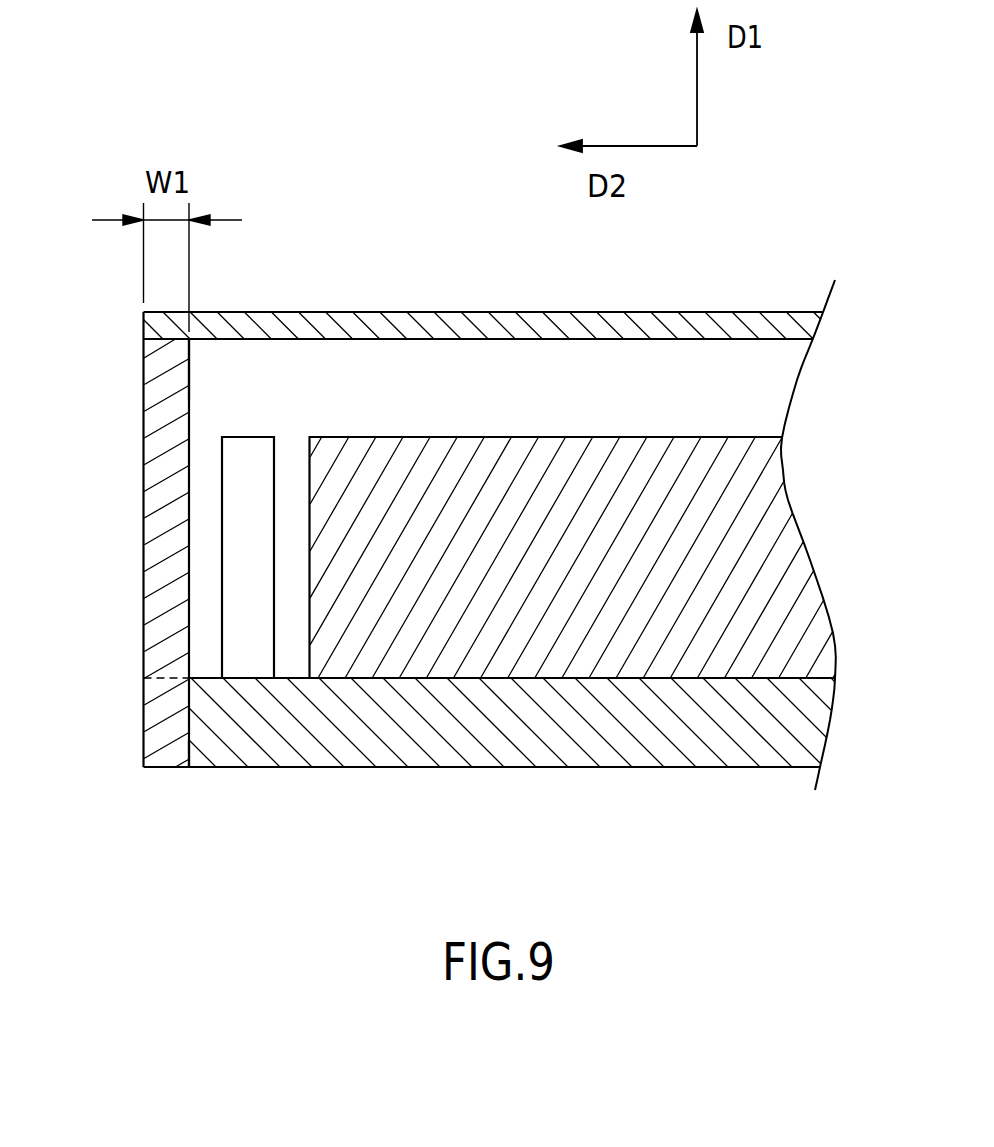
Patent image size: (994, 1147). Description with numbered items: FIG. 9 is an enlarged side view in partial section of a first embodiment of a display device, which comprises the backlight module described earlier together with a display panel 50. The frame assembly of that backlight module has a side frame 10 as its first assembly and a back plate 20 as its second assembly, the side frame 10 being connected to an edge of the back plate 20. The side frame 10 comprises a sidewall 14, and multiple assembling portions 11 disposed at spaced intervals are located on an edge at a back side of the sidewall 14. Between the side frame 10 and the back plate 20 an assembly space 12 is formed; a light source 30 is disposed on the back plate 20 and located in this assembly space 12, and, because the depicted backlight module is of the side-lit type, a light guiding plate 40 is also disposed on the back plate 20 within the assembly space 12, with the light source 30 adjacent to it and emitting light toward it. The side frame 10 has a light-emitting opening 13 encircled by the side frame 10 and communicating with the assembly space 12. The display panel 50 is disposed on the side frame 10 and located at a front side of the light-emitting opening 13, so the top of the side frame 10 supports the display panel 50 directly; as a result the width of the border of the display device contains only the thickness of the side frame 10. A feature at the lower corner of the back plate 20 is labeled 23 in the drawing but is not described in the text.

The side frame 10 is at (138, 423).
The assembling portion 11 is at (162, 728).
The assembly space 12 is at (263, 407).
The light-emitting opening 13 is at (188, 367).
The sidewall 14 is at (163, 595).
The back plate 20 is at (484, 772).
The corner of base plate 23 is at (188, 752).
The light source 30 is at (242, 533).
The light guiding plate 40 is at (597, 460).
The display panel 50 is at (428, 330).